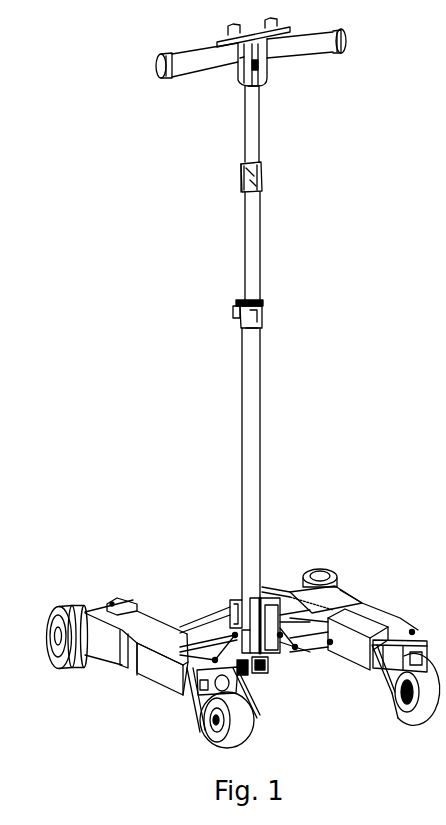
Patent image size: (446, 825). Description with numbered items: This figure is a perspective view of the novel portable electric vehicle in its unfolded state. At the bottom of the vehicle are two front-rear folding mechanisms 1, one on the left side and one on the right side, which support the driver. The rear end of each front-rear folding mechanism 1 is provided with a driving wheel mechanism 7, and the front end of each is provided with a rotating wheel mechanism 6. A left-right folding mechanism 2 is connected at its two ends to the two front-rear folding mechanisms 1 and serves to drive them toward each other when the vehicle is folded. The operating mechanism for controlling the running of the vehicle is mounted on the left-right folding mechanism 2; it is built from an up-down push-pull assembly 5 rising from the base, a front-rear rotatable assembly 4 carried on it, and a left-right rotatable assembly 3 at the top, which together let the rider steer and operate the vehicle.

The front-rear folding mechanism 1 is at (128, 687).
The left-right folding mechanism 2 is at (210, 613).
The left-right rotatable assembly 3 is at (288, 71).
The front-rear rotatable assembly 4 is at (273, 148).
The up-down push-pull assembly 5 is at (273, 357).
The rotating wheel mechanism 6 is at (258, 702).
The driving wheel mechanism 7 is at (76, 583).